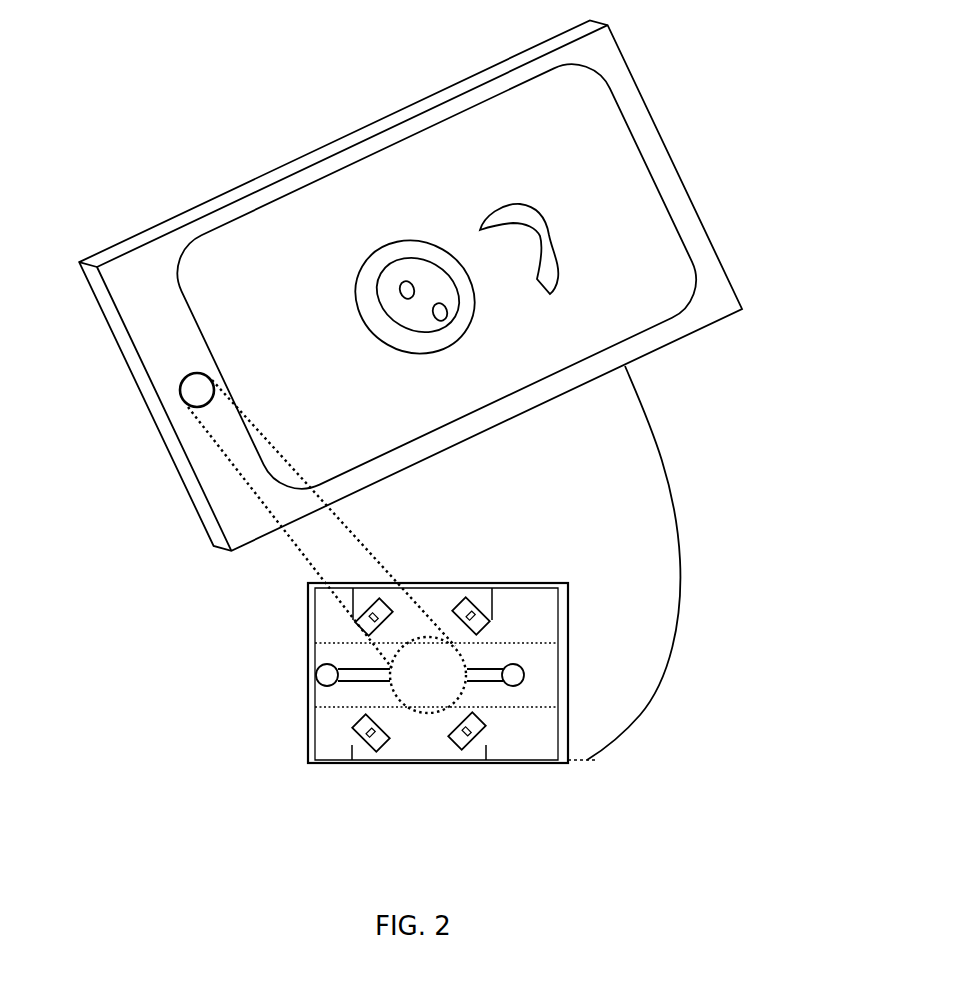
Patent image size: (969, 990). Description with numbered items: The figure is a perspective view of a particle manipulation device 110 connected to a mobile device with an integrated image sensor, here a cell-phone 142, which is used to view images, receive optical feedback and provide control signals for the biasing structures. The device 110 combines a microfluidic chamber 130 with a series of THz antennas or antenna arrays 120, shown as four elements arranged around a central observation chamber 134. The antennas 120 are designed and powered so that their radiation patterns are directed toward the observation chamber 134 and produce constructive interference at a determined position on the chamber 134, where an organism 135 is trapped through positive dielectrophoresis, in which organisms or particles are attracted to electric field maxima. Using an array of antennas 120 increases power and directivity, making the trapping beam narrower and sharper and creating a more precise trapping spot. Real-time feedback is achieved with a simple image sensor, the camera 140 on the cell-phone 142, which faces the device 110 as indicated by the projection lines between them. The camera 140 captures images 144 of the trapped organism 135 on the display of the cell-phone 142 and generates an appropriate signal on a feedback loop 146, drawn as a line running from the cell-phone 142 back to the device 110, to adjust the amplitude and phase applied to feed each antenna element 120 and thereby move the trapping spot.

The device 110 is at (308, 635).
The THz antennas or antenna arrays 120 is at (395, 602).
The microfluidic chamber 130 is at (343, 682).
The observation chamber 134 is at (467, 660).
The organism 135 is at (470, 322).
The camera 140 is at (180, 392).
The cell-phone 142 is at (710, 275).
The images 144 is at (630, 200).
The feedback loop 146 is at (682, 573).